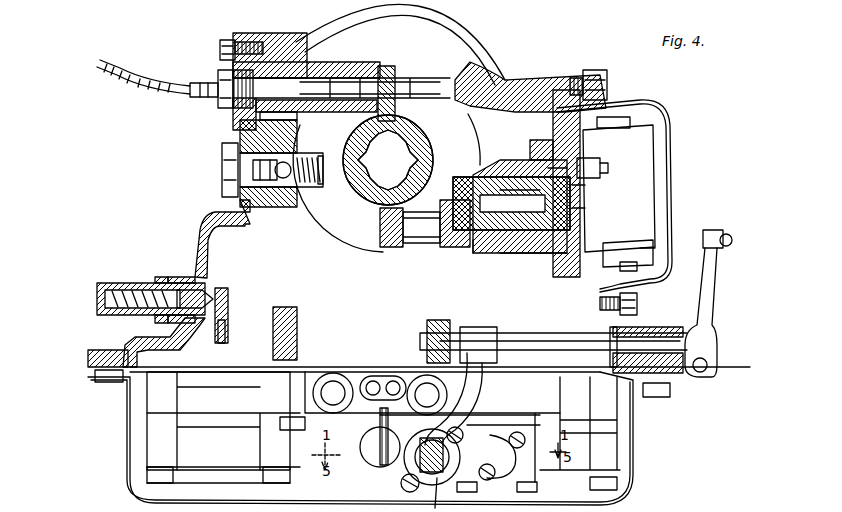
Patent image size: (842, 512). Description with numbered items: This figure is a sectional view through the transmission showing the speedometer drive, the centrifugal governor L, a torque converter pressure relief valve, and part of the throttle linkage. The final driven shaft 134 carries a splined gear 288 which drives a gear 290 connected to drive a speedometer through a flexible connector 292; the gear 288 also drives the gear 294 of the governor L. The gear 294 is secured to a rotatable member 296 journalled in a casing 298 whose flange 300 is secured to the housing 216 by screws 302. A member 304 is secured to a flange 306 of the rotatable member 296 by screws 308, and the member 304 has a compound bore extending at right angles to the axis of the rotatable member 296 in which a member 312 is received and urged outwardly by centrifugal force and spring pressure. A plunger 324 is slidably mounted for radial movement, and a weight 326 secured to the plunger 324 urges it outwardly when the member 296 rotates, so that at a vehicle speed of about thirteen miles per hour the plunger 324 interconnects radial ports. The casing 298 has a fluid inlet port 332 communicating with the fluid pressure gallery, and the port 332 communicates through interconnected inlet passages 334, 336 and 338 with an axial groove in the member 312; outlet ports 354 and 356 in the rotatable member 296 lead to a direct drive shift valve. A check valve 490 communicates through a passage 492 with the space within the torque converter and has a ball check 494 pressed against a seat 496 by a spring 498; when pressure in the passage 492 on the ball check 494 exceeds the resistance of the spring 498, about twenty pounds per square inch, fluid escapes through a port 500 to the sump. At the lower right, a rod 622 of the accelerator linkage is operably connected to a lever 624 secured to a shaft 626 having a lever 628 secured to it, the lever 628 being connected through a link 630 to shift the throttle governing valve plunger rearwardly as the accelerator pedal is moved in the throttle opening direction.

The flexible connector 292 is at (150, 92).
The gear 290 is at (386, 68).
The housing 216 is at (503, 78).
The gear 288 is at (412, 133).
The final driven shaft 134 is at (414, 150).
The screws 302 is at (536, 140).
The fluid inlet port 332 is at (505, 190).
The casing 298 is at (468, 172).
The inlet passage 336 is at (552, 170).
The rotatable member 296 is at (455, 200).
The gear 294 is at (393, 250).
The outlet port 356 is at (463, 258).
The inlet passage 334 is at (508, 258).
The spring 498 is at (298, 155).
The port 500 is at (296, 162).
The passage 492 is at (252, 168).
The check valve 490 is at (268, 170).
The ball check 494 is at (292, 185).
The seat 496 is at (282, 190).
The member 312 is at (630, 120).
The governor L is at (665, 151).
The flange 300 is at (578, 162).
The screws 308 is at (600, 168).
The inlet passage 338 is at (575, 190).
The outlet port 354 is at (578, 210).
The flange 306 is at (580, 235).
The member 304 is at (647, 190).
The weight 326 is at (655, 250).
The plunger 324 is at (633, 272).
The rod 622 is at (730, 241).
The lever 624 is at (718, 275).
The shaft 626 is at (560, 340).
The lever 628 is at (460, 432).
The link 630 is at (403, 488).